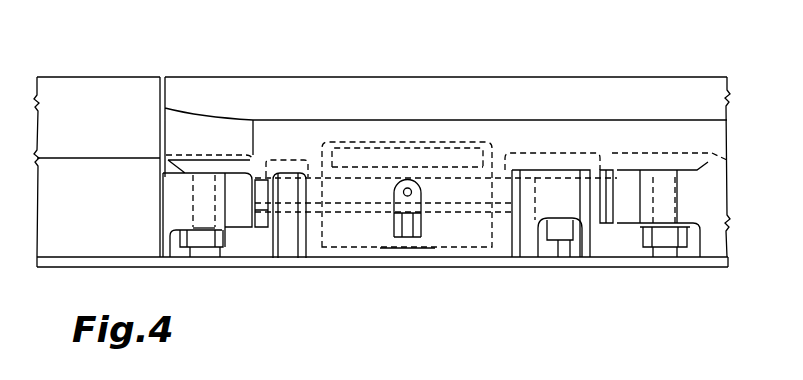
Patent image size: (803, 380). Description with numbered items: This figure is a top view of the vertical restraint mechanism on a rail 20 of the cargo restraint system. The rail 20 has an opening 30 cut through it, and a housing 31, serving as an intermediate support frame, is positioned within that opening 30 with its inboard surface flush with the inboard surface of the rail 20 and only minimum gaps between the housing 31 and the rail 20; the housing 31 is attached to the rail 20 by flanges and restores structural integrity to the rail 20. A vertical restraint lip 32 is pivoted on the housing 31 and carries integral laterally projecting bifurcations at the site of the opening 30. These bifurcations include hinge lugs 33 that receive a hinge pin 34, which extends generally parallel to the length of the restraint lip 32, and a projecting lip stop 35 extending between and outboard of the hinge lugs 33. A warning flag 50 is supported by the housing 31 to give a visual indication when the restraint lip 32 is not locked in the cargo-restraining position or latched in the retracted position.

The rail 20 is at (97, 86).
The vertical restraint lip 32 is at (490, 87).
The housing 31 is at (240, 166).
The opening 30 is at (233, 247).
The hinge pin 34 is at (250, 229).
The hinge lug 33 is at (262, 231).
The lip stop 35 is at (454, 252).
The warning flag 50 is at (563, 249).